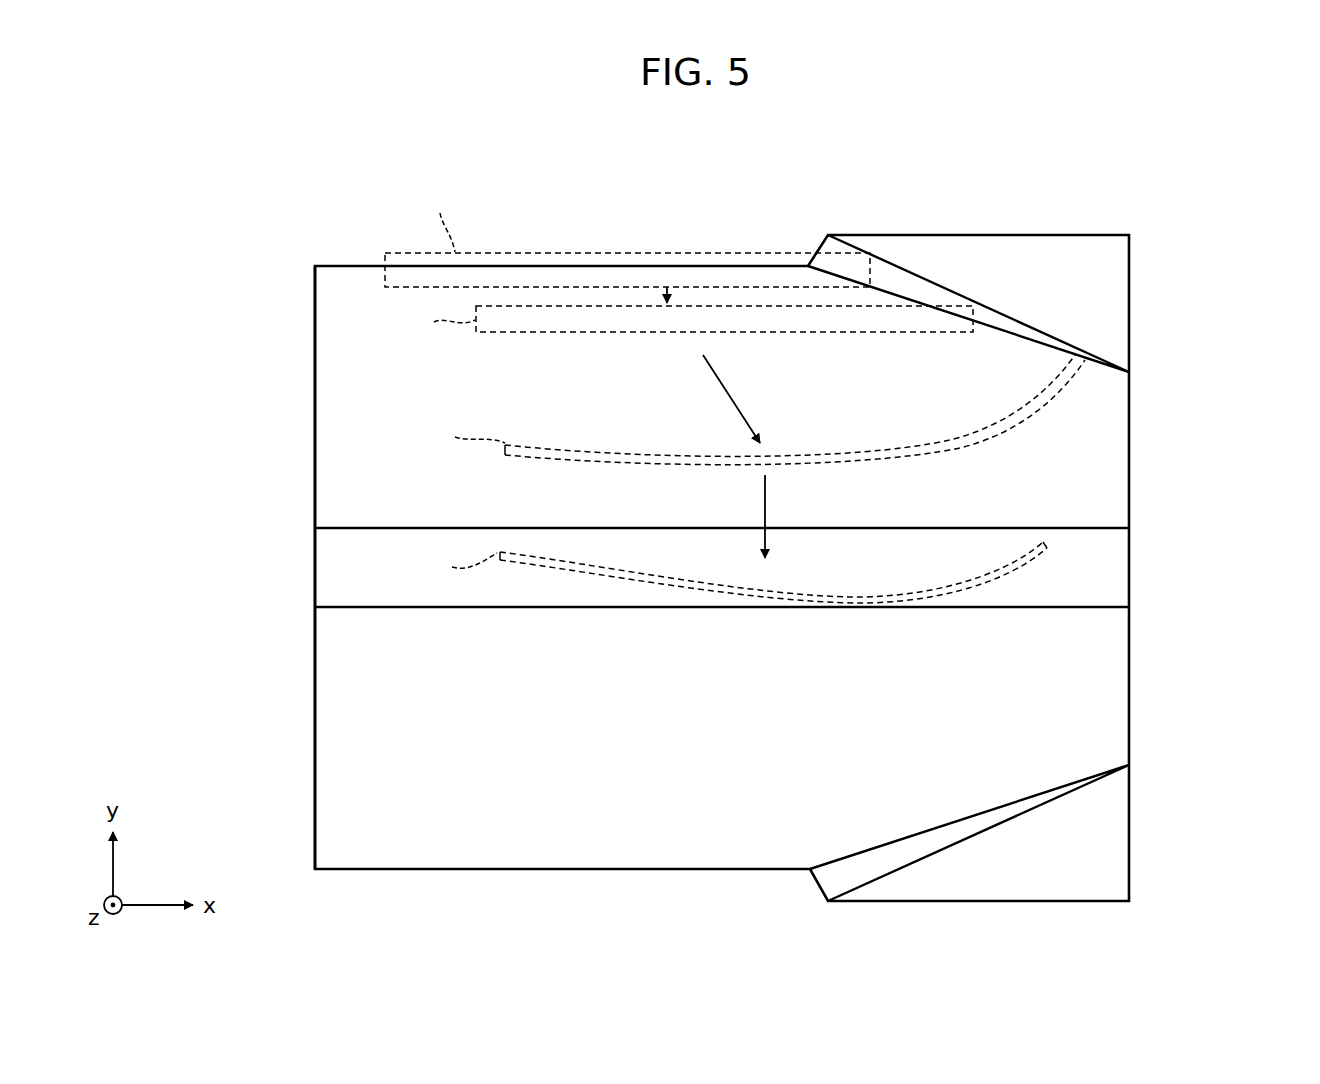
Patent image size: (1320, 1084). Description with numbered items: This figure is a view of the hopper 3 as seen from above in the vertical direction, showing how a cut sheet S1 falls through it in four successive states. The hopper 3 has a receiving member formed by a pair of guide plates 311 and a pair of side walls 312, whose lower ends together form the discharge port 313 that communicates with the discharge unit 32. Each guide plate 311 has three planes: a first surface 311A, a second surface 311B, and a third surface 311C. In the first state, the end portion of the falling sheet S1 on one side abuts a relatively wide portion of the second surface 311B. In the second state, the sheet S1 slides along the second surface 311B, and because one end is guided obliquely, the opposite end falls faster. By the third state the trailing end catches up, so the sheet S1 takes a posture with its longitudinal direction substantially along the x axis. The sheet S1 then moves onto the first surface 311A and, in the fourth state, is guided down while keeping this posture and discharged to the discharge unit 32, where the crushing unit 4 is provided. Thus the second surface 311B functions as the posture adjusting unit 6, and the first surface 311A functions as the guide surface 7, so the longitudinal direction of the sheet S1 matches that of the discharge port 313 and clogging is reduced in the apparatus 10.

The liquid ejecting apparatus 10 is at (748, 501).
The hopper 3 is at (704, 538).
The guide plate 311 is at (704, 576).
The first surface 311A is at (257, 567).
The guide surface 7 is at (330, 366).
The second surface 311B is at (947, 576).
The posture adjusting unit 6 is at (898, 268).
The third surface 311C is at (1122, 290).
The side wall 312 is at (718, 543).
The crushing unit 4 is at (335, 540).
The discharge port 313 is at (725, 593).
The discharge unit 32 is at (328, 582).
The sheet S1 is at (601, 252).